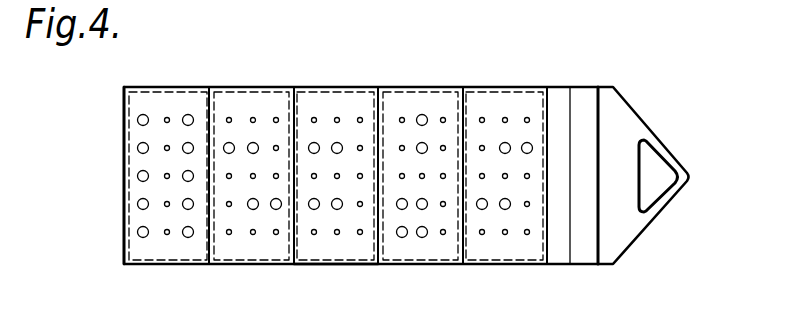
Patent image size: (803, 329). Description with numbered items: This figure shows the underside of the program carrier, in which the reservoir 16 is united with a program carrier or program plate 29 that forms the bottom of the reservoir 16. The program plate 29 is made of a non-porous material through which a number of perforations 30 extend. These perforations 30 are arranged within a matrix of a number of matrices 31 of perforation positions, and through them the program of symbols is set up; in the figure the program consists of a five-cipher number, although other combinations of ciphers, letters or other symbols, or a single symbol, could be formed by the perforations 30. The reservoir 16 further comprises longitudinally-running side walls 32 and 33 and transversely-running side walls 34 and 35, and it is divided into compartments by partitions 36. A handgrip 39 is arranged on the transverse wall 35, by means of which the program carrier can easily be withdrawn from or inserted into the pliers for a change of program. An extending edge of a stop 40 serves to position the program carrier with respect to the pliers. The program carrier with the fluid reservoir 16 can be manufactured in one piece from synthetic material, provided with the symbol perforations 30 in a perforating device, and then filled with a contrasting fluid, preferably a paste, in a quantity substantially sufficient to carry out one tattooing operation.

The reservoir 16 is at (124, 137).
The program plate 29 is at (244, 107).
The perforations 30 is at (165, 236).
The matrices 31 is at (157, 106).
The longitudinally-running side wall 32 is at (328, 90).
The longitudinally-running side wall 33 is at (338, 266).
The transversely-running side wall 34 is at (124, 206).
The transversely-running side wall 35 is at (546, 254).
The partitions 36 is at (464, 266).
The handgrip 39 is at (651, 158).
The stop 40 is at (581, 97).